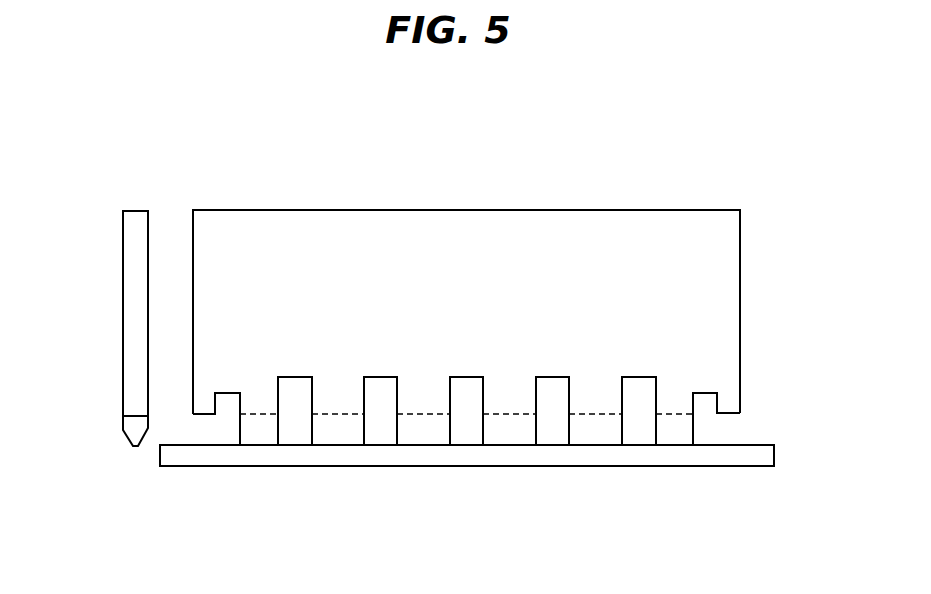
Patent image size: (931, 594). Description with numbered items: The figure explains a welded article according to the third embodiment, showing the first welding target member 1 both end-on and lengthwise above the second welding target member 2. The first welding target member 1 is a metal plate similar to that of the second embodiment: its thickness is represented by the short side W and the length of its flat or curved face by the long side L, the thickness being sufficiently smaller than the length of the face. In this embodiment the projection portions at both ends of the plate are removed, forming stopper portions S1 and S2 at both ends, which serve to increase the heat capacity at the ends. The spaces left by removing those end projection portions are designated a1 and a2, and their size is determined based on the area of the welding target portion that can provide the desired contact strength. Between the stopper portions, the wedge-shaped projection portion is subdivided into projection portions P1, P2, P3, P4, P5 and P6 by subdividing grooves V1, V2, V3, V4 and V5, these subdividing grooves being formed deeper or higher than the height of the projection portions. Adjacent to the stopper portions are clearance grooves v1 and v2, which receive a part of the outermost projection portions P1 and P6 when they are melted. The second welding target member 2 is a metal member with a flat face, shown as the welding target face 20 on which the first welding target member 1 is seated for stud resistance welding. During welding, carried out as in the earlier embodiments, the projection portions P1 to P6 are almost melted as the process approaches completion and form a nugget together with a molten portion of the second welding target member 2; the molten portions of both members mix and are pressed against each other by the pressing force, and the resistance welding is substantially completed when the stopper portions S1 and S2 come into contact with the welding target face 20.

The first welding target member 1 is at (96, 254).
The second welding target member 2 is at (795, 445).
The welding target face 20 is at (758, 444).
The short side W is at (133, 211).
The long side L is at (378, 210).
The stopper portion S1 is at (132, 375).
The stopper portion S2 is at (729, 407).
The clearance groove v1 is at (228, 400).
The clearance groove v2 is at (707, 398).
The projection portion P1 is at (129, 434).
The projection portion P2 is at (340, 435).
The projection portion P3 is at (427, 435).
The projection portion P4 is at (513, 435).
The projection portion P5 is at (598, 435).
The projection portion P6 is at (680, 435).
The subdividing groove V1 is at (298, 435).
The subdividing groove V2 is at (383, 435).
The subdividing groove V3 is at (468, 435).
The subdividing groove V4 is at (555, 435).
The subdividing groove V5 is at (638, 435).
The space a1 is at (202, 436).
The space a2 is at (737, 433).